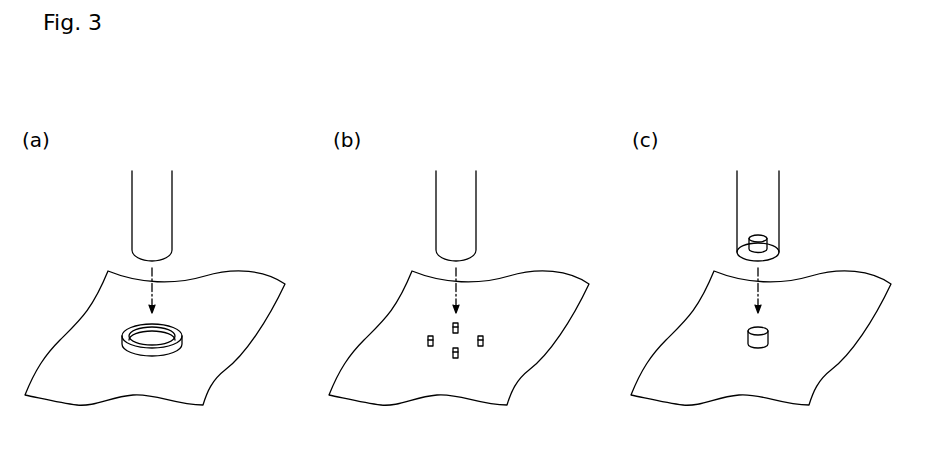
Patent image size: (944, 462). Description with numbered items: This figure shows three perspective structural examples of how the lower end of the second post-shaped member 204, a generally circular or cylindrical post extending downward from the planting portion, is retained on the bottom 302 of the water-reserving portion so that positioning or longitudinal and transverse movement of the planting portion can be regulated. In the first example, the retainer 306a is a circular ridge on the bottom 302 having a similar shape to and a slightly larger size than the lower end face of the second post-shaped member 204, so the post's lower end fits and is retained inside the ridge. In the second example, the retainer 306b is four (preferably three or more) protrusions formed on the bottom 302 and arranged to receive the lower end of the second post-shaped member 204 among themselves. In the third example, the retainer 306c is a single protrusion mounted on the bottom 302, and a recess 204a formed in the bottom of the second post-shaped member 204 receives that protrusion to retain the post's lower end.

The second post-shaped member 204 is at (161, 208).
The recess 204a is at (749, 250).
The bottom 302 is at (88, 329).
The retainer 306a is at (145, 356).
The retainer 306b is at (480, 346).
The retainer 306c is at (757, 348).